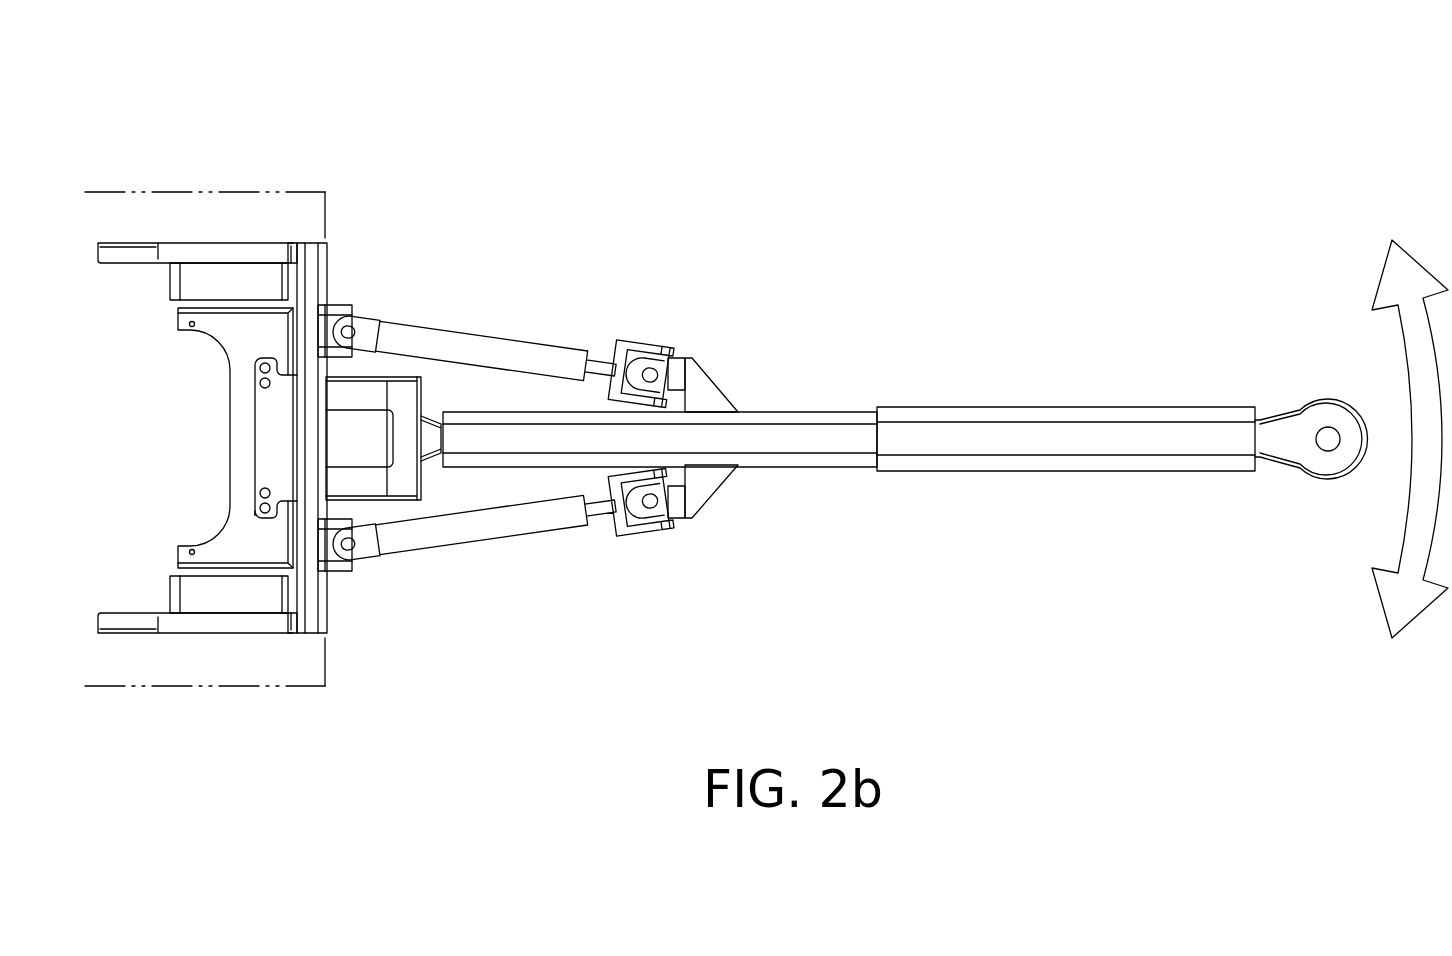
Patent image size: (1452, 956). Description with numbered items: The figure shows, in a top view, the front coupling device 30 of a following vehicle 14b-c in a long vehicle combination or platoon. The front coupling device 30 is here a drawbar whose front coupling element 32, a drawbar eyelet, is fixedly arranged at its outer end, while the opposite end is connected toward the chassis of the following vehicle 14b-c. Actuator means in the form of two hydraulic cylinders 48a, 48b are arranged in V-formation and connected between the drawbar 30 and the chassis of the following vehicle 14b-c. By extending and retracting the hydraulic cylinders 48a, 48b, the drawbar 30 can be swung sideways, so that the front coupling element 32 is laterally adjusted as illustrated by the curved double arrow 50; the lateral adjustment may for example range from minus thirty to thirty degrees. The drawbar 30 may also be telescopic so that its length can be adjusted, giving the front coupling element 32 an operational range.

The following vehicle 14b-c is at (322, 155).
The hydraulic cylinder 48b is at (514, 352).
The hydraulic cylinder 48a is at (514, 523).
The front coupling device 30 is at (991, 406).
The front coupling element 32 is at (1320, 401).
The arrow 50 is at (1428, 440).